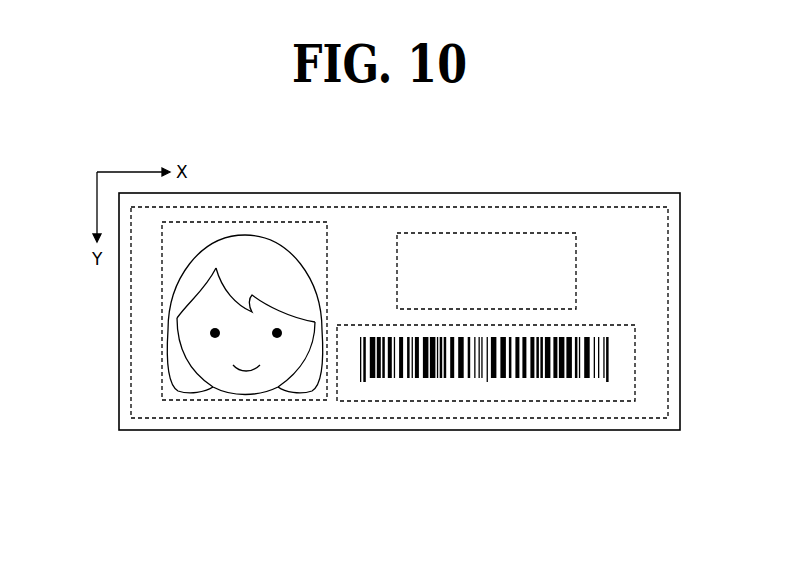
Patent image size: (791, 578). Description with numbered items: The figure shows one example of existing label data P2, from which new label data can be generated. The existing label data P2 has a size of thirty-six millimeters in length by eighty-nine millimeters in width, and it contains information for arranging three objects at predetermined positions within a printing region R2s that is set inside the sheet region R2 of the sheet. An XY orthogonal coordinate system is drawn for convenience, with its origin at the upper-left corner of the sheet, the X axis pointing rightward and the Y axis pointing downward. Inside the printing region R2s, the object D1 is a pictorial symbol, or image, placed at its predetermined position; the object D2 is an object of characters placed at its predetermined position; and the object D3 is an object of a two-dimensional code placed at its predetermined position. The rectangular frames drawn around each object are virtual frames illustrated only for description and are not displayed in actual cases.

The sheet region R2 is at (119, 340).
The printing region R2s is at (193, 419).
The object of a pictorial symbol D1 is at (261, 235).
The object of characters D2 is at (482, 240).
The object of a two-dimensional code D3 is at (493, 387).
The existing label data P2 is at (302, 462).